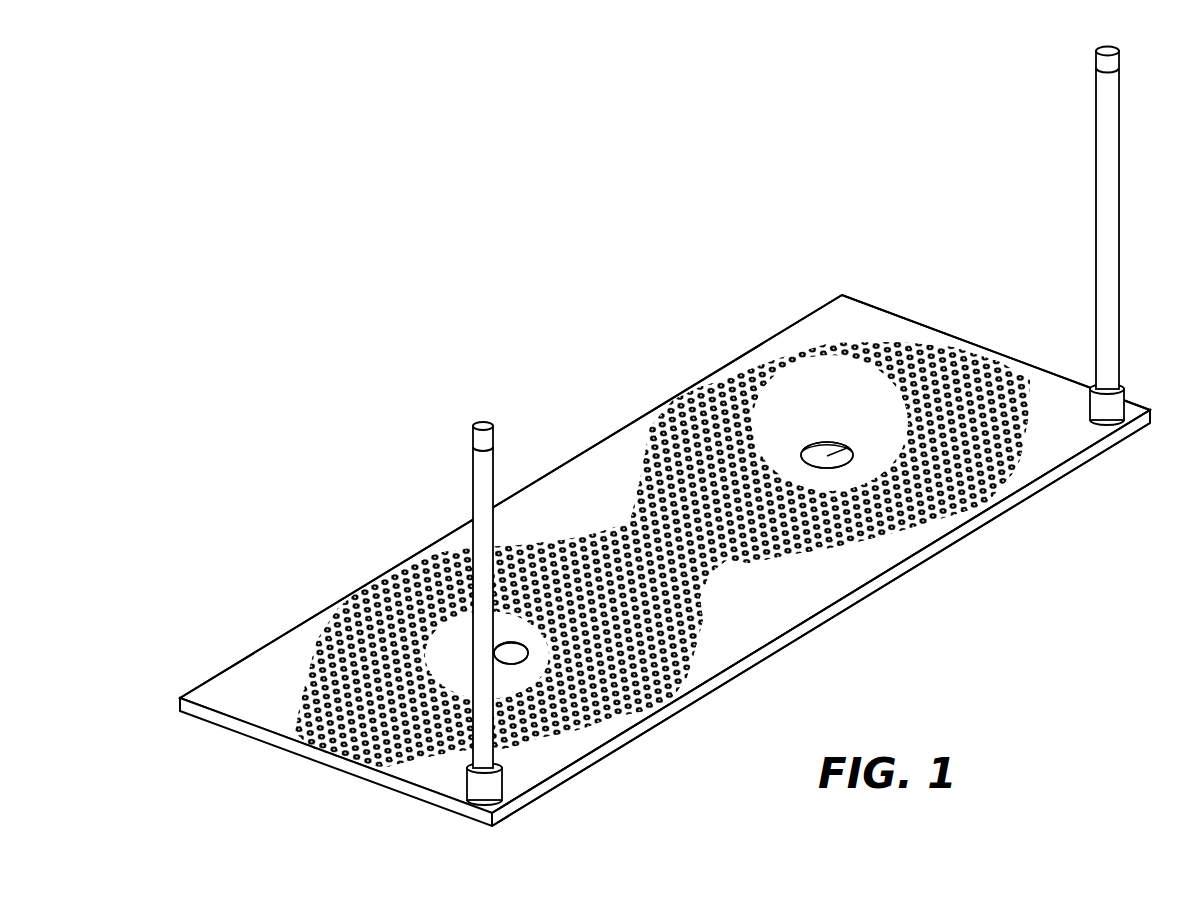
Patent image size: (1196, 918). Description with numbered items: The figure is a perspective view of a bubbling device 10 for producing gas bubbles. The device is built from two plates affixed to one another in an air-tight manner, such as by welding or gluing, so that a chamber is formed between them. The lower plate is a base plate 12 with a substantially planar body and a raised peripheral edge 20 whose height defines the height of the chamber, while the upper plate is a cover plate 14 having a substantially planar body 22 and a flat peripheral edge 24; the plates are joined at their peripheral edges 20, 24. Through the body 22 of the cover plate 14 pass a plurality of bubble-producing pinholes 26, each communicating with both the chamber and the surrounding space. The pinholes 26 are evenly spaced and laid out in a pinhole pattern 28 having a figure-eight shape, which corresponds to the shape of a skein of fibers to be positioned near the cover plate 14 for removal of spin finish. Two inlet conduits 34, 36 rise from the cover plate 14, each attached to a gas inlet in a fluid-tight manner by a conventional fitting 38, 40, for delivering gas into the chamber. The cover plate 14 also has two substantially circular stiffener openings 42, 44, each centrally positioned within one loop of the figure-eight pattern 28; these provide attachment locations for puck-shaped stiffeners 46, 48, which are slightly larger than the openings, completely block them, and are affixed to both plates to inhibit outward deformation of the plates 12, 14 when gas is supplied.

The bubbling device 10 is at (563, 272).
The base plate 12 is at (246, 744).
The cover plate 14 is at (270, 670).
The raised peripheral edge 20 is at (847, 602).
The planar body 22 is at (739, 619).
The flat peripheral edge 24 is at (795, 612).
The pinholes 26 is at (677, 401).
The pinhole pattern 28 is at (842, 352).
The inlet conduit 34 is at (483, 497).
The inlet conduit 36 is at (1118, 88).
The fitting 38 is at (474, 790).
The fitting 40 is at (1108, 408).
The stiffener opening 42 is at (518, 643).
The stiffener opening 44 is at (819, 442).
The stiffener 46 is at (510, 647).
The stiffener 48 is at (832, 455).